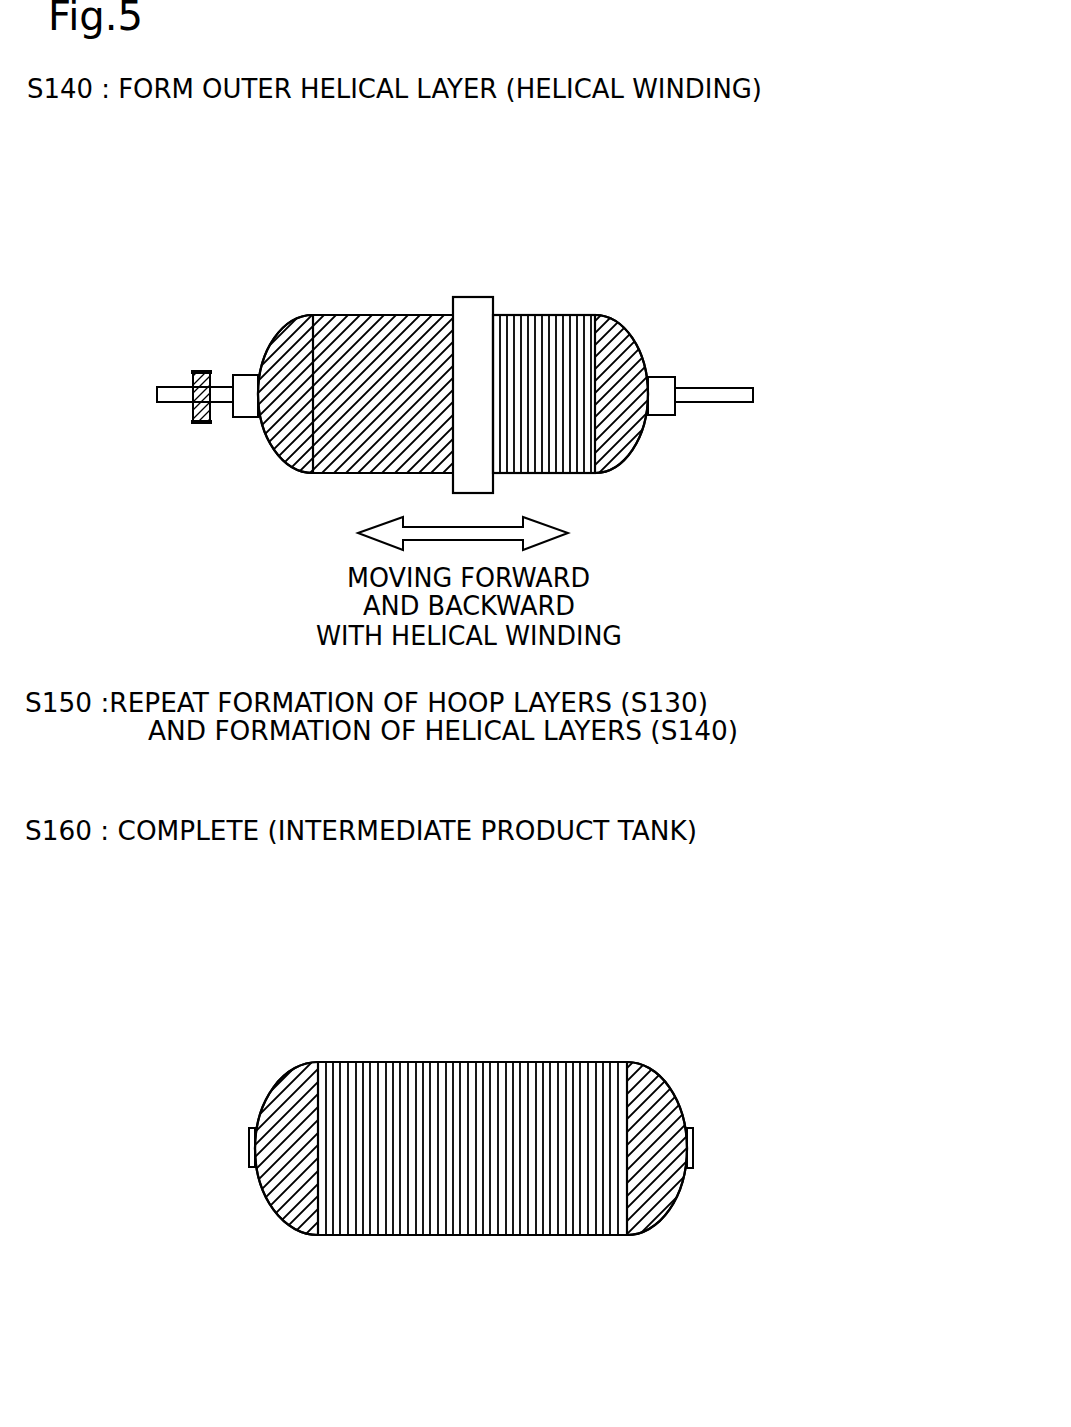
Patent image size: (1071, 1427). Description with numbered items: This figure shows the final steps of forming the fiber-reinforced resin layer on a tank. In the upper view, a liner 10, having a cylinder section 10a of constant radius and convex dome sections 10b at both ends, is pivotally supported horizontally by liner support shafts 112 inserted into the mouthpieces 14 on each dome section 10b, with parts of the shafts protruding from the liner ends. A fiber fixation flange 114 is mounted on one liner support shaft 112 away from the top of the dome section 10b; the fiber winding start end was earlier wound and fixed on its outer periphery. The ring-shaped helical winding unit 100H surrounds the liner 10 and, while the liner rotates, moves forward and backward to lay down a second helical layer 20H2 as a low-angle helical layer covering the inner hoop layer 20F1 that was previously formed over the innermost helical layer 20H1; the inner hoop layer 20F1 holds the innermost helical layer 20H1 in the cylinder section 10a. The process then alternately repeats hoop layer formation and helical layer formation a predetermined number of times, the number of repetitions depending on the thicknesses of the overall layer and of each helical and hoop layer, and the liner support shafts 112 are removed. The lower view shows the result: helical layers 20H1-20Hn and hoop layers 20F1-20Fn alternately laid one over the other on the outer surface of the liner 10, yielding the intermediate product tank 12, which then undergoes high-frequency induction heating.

The liner 10 is at (732, 251).
The cylinder section 10a is at (357, 323).
The dome section 10b is at (283, 467).
The intermediate product tank 12 is at (719, 961).
The mouthpiece 14 is at (245, 417).
The innermost helical layer 20H1 is at (620, 352).
The second helical layer 20H2 is at (290, 347).
The inner hoop layer 20F1 is at (538, 330).
The helical layers 20H1-20Hn is at (295, 1097).
The hoop layers 20F1-20Fn is at (492, 1072).
The helical winding unit 100H is at (477, 297).
The liner support shaft 112 is at (738, 398).
The fiber fixation flange 114 is at (193, 413).